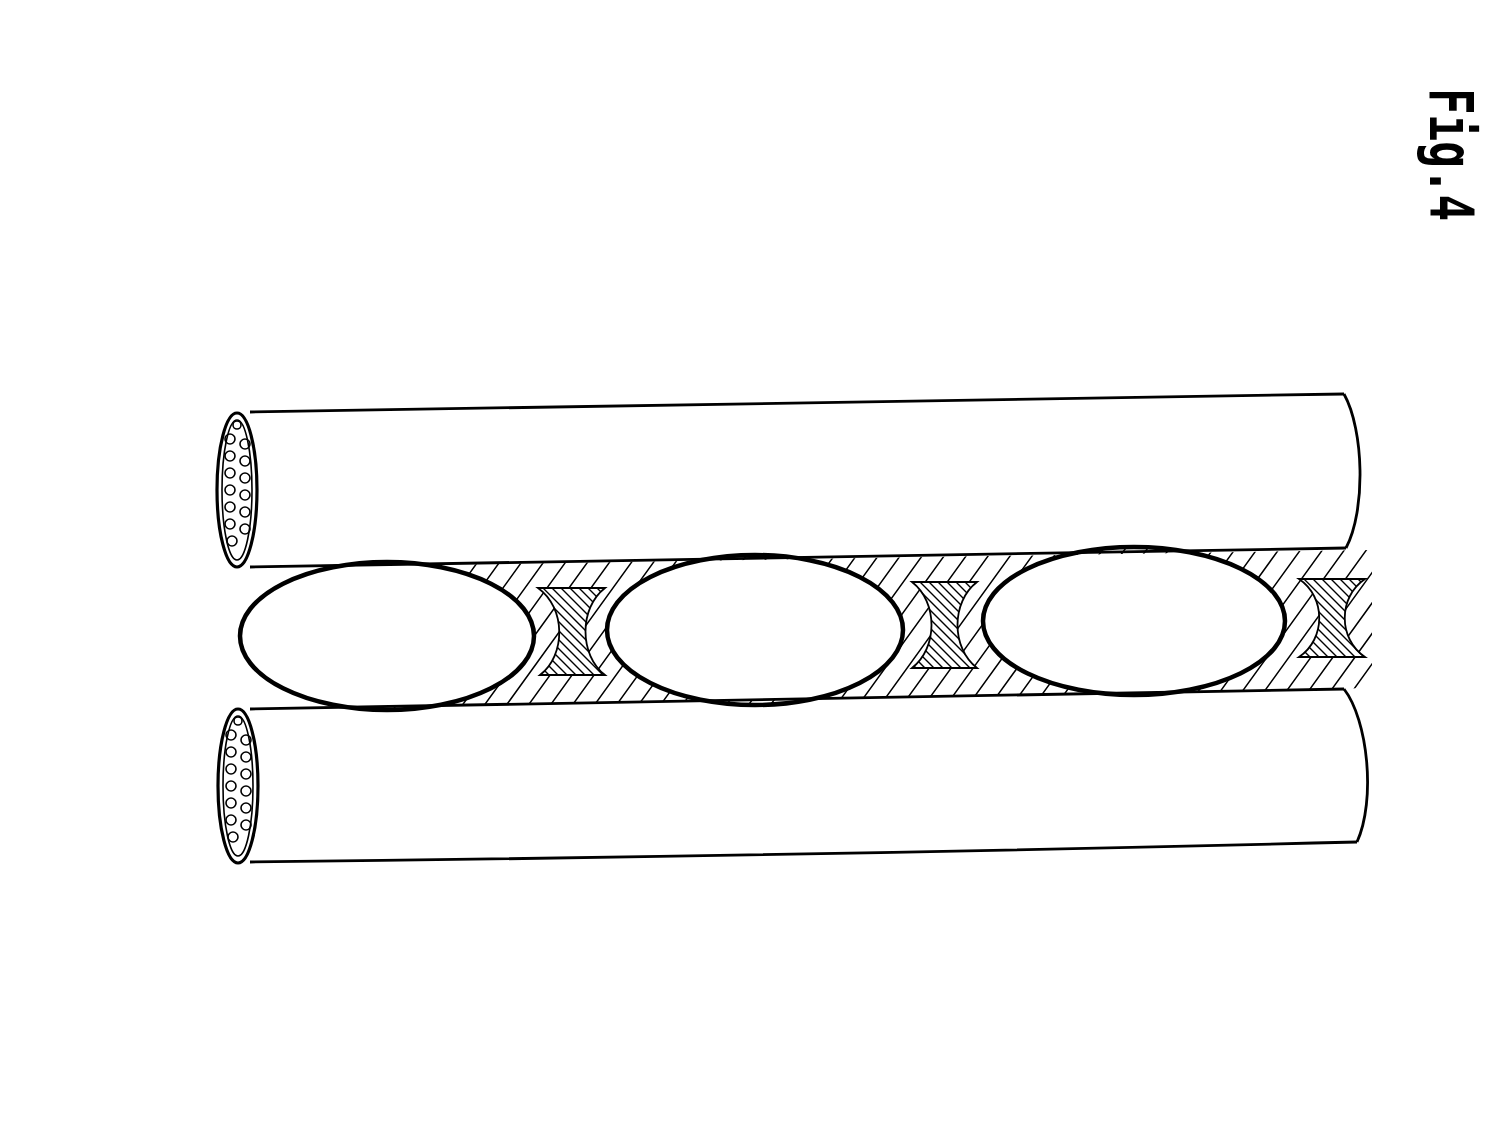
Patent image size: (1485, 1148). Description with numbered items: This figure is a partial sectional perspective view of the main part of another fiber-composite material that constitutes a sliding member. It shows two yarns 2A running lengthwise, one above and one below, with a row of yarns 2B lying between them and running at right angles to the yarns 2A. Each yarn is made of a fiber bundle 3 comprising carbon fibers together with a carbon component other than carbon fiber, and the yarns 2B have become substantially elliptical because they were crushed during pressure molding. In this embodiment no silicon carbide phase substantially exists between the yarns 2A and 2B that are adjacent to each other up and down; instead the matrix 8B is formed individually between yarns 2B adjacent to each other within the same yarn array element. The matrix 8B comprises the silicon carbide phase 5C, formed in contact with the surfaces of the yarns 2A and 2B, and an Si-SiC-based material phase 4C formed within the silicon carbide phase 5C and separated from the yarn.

The yarn 2A is at (855, 398).
The yarn 2B is at (238, 597).
The fiber bundle 3 is at (220, 492).
The binder element 4C is at (555, 690).
The silicon carbide phase 5C is at (612, 605).
The matrix 8B is at (568, 552).